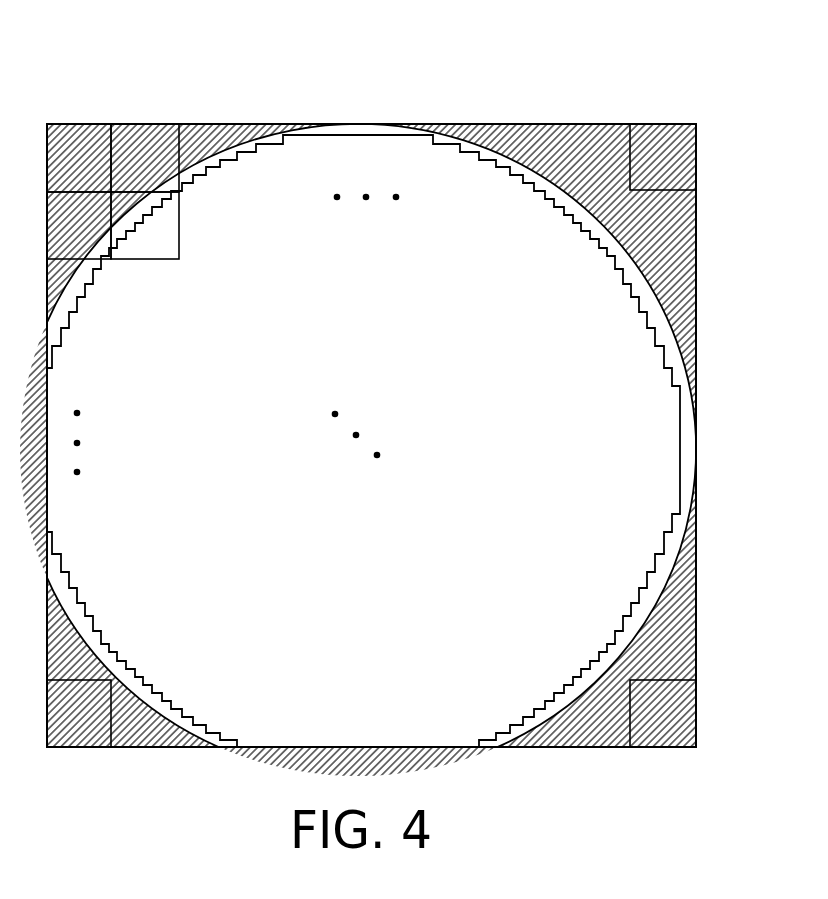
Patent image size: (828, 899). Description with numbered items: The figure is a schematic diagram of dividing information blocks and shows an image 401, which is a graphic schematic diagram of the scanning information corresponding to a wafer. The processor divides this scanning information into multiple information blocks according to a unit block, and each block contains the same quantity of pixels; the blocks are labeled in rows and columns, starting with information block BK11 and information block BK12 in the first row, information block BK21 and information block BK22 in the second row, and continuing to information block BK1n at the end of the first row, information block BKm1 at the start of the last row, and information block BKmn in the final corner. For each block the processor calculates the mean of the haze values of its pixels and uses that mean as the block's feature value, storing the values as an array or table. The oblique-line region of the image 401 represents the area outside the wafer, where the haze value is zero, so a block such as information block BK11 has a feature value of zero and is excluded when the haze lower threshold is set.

The image 401 is at (600, 123).
The information block BK11 is at (79, 158).
The information block BK12 is at (145, 158).
The information block BK21 is at (79, 225).
The information block BK22 is at (145, 225).
The information block BK1n is at (663, 157).
The information block BKm1 is at (79, 713).
The information block BKmn is at (663, 713).